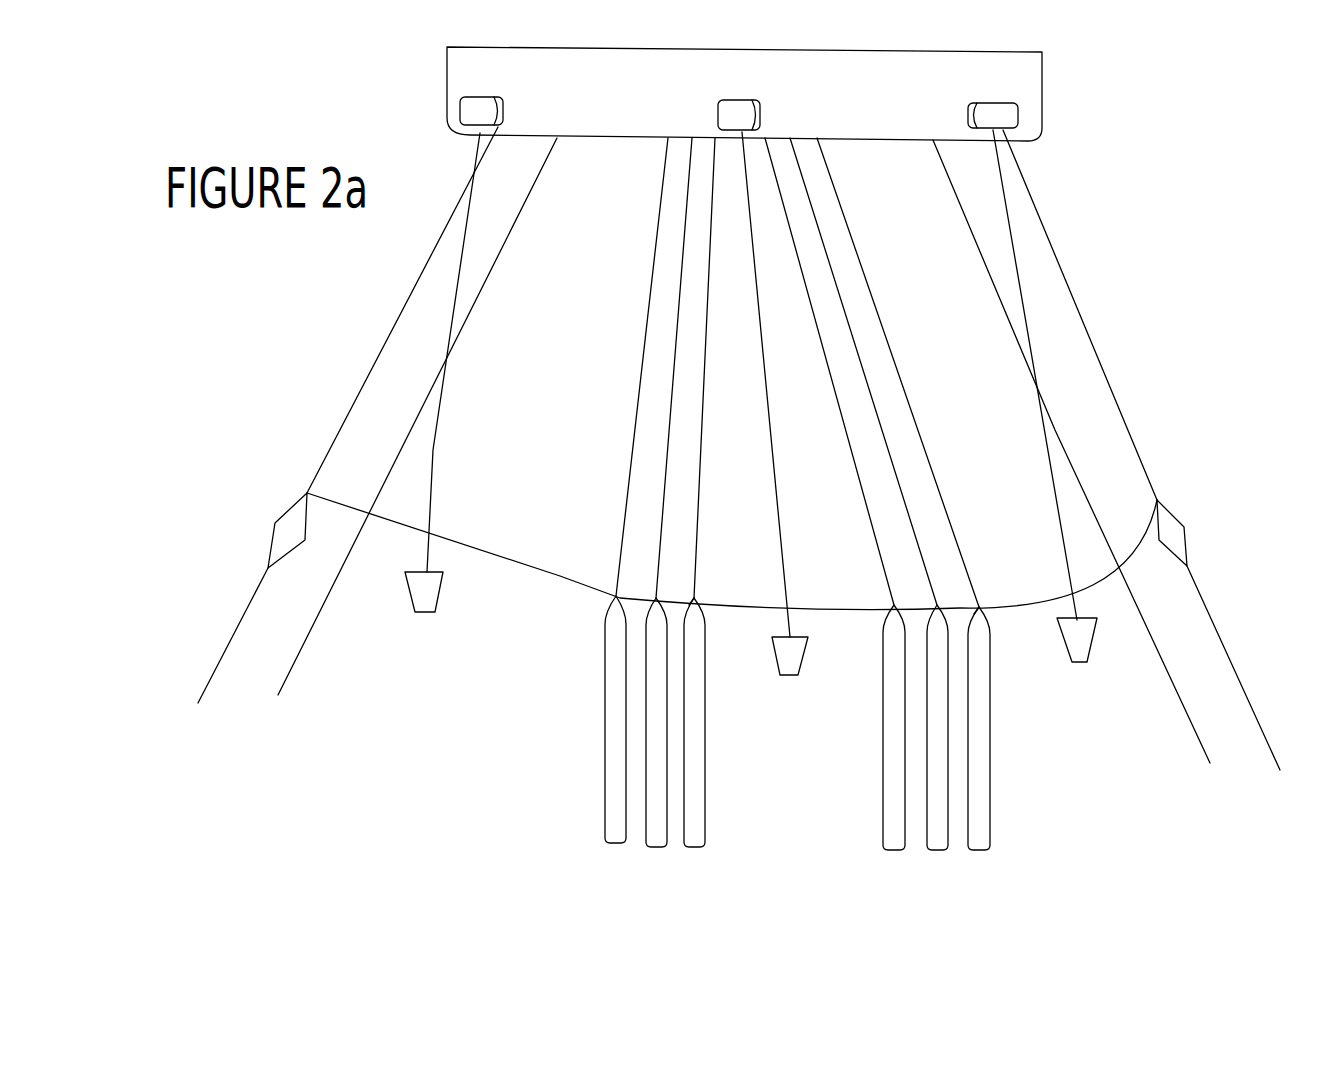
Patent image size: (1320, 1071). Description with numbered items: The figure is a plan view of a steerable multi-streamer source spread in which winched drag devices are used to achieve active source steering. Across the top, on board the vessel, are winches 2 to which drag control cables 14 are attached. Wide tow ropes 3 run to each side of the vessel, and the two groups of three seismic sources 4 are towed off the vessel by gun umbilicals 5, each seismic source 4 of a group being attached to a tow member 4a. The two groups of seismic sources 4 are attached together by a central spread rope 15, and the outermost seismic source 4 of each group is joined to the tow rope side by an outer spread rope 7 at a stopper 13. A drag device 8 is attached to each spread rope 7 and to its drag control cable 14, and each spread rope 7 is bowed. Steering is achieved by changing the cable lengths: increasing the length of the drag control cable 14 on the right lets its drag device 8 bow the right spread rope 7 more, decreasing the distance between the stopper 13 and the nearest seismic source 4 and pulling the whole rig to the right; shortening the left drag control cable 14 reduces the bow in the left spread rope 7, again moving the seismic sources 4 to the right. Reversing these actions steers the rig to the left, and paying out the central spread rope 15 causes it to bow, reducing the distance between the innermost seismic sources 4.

The winch 2 is at (460, 107).
The wide tow rope 3 is at (392, 320).
The seismic source 4 is at (705, 753).
The tow member 4a is at (680, 597).
The gun umbilical 5 is at (707, 287).
The spread rope 7 is at (550, 572).
The drag device 8 is at (440, 605).
The stopper 13 is at (275, 523).
The drag control cable 14 is at (440, 421).
The central spread rope 15 is at (826, 601).